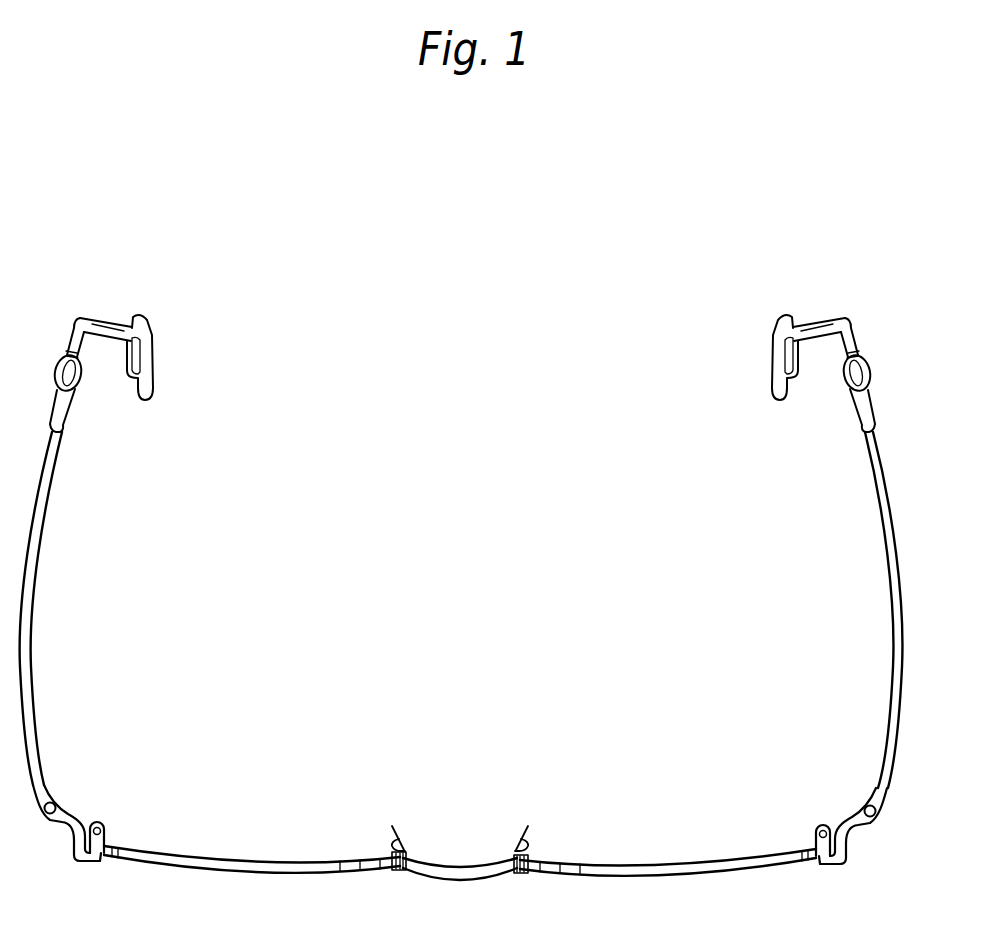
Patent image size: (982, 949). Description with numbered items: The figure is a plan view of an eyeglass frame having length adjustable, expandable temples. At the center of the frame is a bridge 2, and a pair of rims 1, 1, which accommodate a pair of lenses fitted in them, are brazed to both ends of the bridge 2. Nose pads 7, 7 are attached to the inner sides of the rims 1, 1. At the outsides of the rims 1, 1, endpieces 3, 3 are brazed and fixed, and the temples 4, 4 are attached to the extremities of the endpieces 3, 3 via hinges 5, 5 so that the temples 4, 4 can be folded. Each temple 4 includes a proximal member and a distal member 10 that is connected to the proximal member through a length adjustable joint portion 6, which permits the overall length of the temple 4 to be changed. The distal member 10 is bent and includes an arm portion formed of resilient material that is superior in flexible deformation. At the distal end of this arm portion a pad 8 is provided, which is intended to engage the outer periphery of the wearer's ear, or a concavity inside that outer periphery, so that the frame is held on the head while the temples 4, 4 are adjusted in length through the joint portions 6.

The rim 1 is at (275, 873).
The bridge 2 is at (458, 878).
The endpiece 3 is at (73, 857).
The temple 4 is at (880, 580).
The hinge 5 is at (868, 803).
The length adjustable joint portion 6 is at (844, 390).
The nose pad 7 is at (524, 838).
The pad 8 is at (773, 364).
The distal member 10 is at (843, 320).